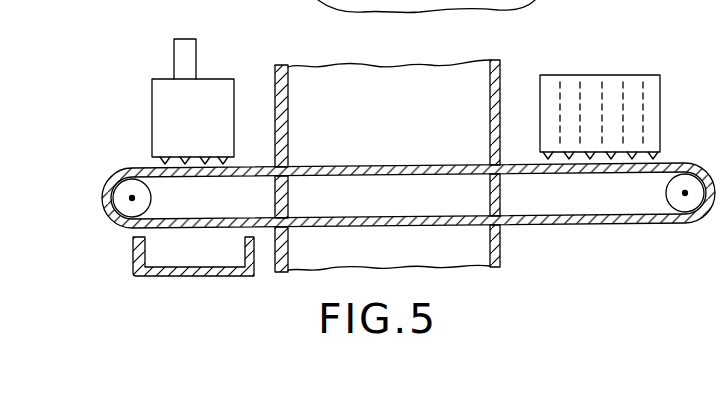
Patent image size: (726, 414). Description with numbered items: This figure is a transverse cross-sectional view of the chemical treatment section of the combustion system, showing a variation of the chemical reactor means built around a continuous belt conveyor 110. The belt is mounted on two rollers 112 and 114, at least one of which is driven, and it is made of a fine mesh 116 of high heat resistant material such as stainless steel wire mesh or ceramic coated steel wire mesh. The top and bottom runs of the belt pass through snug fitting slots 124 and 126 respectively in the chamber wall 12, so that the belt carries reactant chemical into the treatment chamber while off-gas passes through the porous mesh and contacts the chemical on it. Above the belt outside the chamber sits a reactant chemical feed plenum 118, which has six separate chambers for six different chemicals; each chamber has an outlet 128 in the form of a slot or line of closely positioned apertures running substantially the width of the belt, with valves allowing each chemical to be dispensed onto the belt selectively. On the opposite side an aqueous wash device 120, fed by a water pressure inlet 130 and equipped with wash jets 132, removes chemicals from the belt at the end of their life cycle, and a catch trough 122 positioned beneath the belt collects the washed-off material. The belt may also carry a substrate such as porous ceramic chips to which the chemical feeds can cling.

The first wall means 12 is at (500, 71).
The conveyor 110 is at (409, 171).
The roller 112 is at (153, 198).
The roller 114 is at (664, 194).
The fine mesh 116 is at (428, 164).
The reactant chemical feed plenum 118 is at (625, 111).
The aqueous wash device 120 is at (175, 97).
The catch trough 122 is at (133, 256).
The slot 124 is at (288, 154).
The slot 126 is at (288, 230).
The outlet 128 is at (698, 146).
The water pressure inlet 130 is at (197, 62).
The wash jets 132 is at (153, 162).